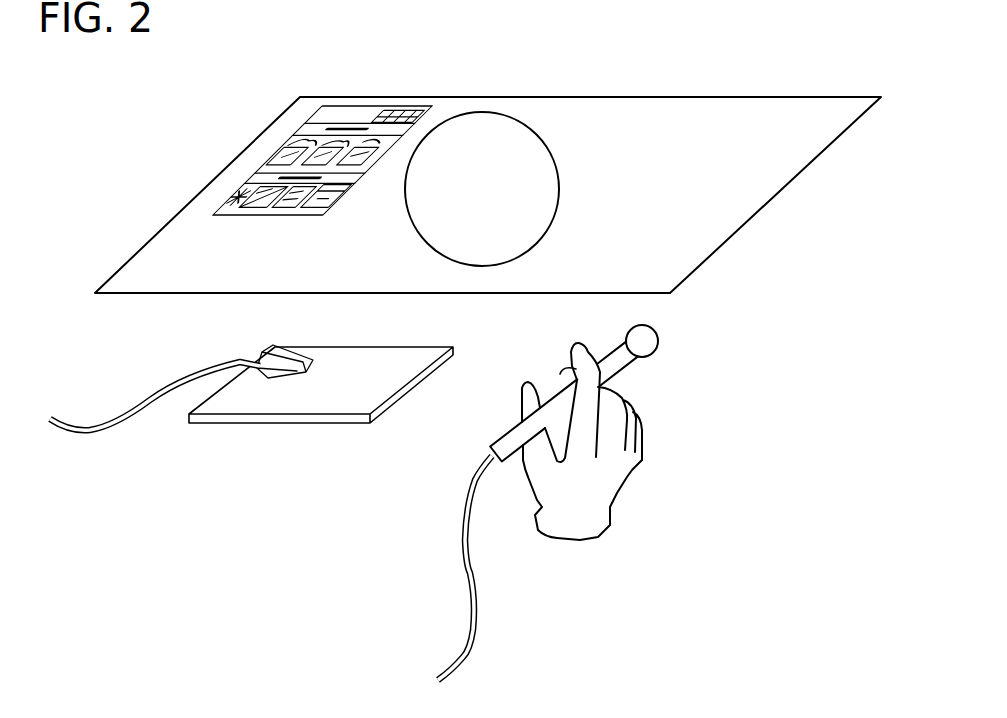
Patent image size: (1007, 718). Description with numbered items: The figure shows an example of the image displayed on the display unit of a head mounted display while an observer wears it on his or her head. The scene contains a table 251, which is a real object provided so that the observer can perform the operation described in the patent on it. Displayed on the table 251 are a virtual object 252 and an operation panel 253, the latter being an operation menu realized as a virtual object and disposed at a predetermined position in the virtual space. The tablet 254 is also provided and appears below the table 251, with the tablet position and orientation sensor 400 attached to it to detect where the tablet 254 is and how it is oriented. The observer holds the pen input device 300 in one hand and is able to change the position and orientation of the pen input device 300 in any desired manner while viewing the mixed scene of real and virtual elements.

The table 251 is at (834, 97).
The virtual object 252 is at (548, 150).
The operation panel 253 is at (402, 105).
The tablet 254 is at (340, 424).
The pen input device 300 is at (659, 340).
The tablet position and orientation sensor 400 is at (307, 353).